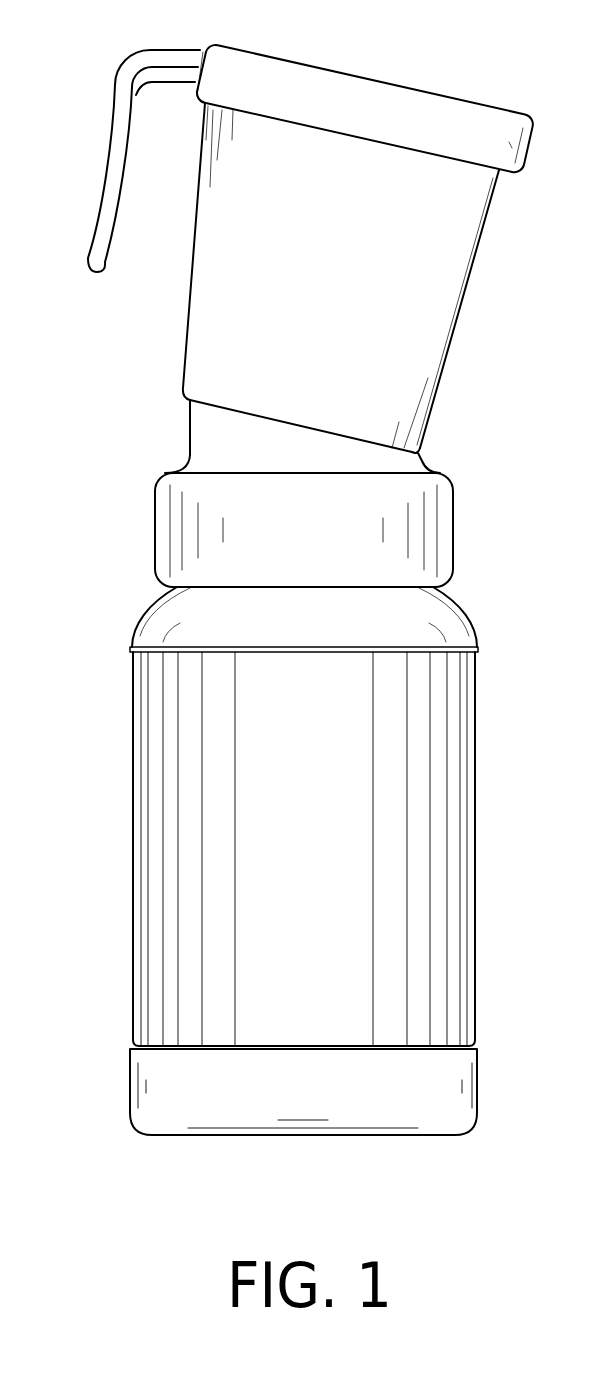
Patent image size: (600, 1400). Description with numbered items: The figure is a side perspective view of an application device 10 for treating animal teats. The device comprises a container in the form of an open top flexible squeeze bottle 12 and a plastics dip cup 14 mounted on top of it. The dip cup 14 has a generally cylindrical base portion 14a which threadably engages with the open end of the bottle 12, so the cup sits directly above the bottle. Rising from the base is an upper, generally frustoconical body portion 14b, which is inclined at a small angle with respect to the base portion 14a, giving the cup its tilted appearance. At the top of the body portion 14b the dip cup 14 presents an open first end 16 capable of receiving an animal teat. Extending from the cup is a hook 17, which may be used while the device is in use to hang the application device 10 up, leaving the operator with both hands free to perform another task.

The application device 10 is at (110, 489).
The flexible squeeze bottle 12 is at (476, 849).
The dip cup 14 is at (485, 222).
The base portion 14a is at (155, 557).
The body portion 14b is at (459, 312).
The open first end 16 is at (369, 78).
The hook 17 is at (103, 199).